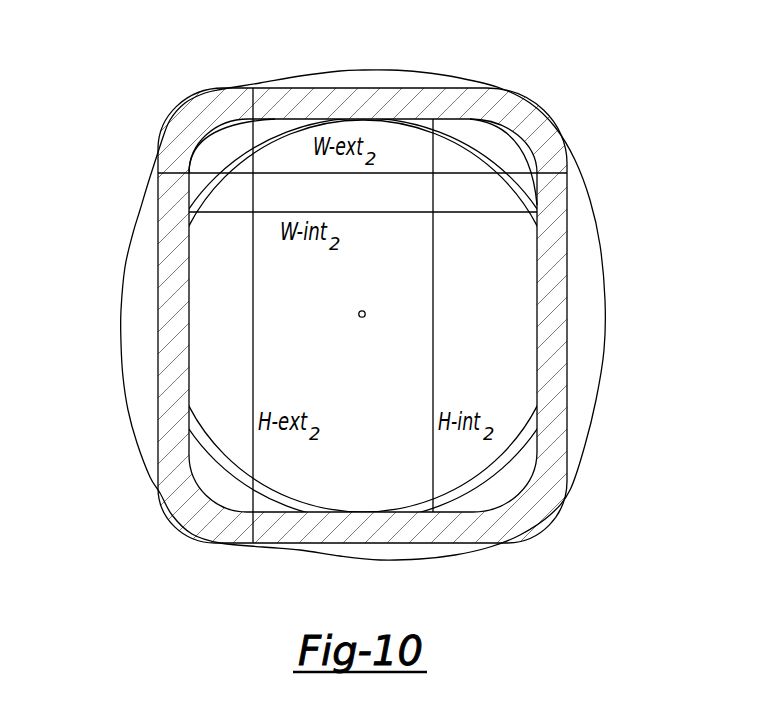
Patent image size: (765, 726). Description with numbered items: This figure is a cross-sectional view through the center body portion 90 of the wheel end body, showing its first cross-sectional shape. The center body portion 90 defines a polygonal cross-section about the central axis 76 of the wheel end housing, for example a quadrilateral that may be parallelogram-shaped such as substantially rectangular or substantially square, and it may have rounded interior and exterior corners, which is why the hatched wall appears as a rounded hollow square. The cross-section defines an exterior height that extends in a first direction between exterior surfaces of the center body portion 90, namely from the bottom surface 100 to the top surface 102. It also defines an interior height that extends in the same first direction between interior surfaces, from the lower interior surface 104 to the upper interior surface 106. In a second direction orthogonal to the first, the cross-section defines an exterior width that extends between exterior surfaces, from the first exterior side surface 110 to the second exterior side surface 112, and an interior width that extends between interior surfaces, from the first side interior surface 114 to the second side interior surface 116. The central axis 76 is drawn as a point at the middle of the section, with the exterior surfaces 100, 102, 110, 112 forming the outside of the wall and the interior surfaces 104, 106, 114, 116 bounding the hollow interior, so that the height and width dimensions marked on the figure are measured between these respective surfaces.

The center body portion 90 is at (240, 86).
The bottom surface 100 is at (297, 543).
The top surface 102 is at (360, 87).
The lower interior surface 104 is at (356, 512).
The upper interior surface 106 is at (397, 120).
The first exterior side surface 110 is at (158, 238).
The second exterior side surface 112 is at (567, 221).
The first side interior surface 114 is at (189, 286).
The second side interior surface 116 is at (537, 295).
The central axis 76 is at (355, 314).